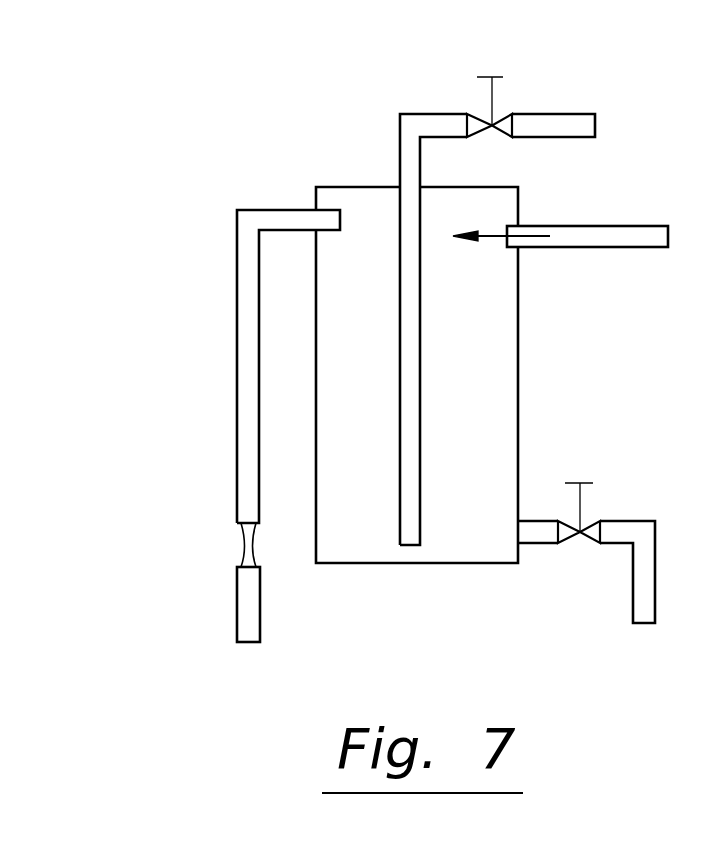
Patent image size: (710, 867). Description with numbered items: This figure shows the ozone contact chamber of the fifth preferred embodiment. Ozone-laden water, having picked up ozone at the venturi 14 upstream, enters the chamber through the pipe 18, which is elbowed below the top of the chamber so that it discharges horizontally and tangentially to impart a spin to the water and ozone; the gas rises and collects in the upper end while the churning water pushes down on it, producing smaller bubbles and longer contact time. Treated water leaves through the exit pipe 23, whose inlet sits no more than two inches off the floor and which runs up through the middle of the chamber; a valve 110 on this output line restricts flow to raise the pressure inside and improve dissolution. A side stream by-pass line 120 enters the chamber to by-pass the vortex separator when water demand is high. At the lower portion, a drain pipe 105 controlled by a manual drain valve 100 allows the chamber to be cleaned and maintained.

The venturi 14 is at (253, 608).
The pipe 18 is at (278, 217).
The exit pipe 23 is at (418, 117).
The drain valve 100 is at (597, 520).
The drain pipe 105 is at (530, 545).
The valve 110 is at (512, 112).
The side stream by-pass line 120 is at (575, 230).